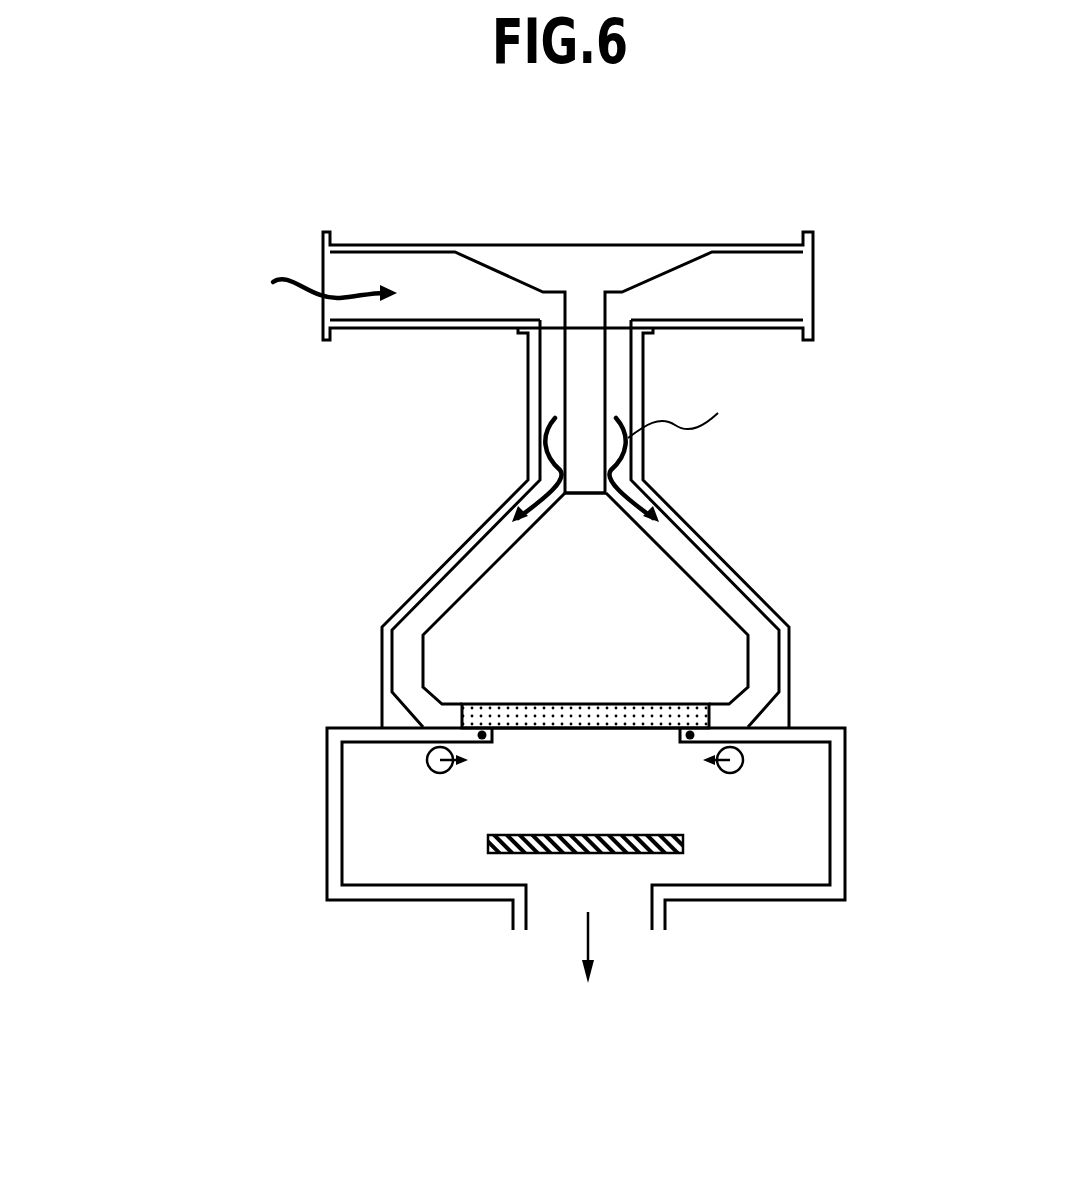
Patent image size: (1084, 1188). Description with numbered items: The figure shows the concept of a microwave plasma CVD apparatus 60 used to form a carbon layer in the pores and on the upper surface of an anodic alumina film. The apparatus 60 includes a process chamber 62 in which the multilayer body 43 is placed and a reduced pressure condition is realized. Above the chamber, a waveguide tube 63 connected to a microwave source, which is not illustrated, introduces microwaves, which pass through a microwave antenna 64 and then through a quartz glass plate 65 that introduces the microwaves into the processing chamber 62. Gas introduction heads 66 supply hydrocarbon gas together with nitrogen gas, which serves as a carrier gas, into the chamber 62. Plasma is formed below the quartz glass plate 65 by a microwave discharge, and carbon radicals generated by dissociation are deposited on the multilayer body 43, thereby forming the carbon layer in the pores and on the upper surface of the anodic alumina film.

The plasma CVD apparatus 60 is at (270, 156).
The process chamber 62 is at (845, 812).
The waveguide tube 63 is at (380, 240).
The microwave antenna 64 is at (815, 517).
The quartz glass plate 65 is at (550, 703).
The gas introduction heads 66 is at (438, 773).
The multilayer body 43 is at (683, 838).